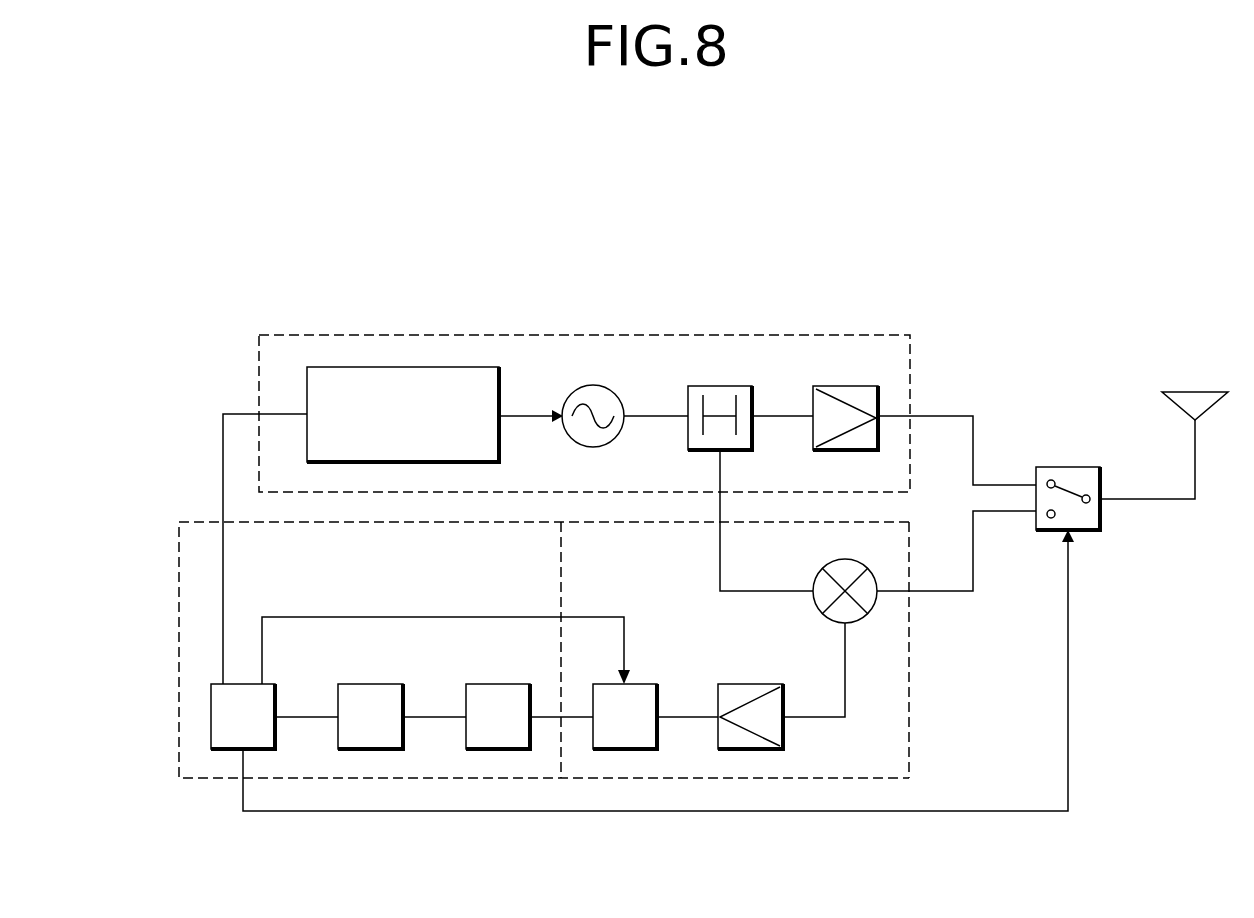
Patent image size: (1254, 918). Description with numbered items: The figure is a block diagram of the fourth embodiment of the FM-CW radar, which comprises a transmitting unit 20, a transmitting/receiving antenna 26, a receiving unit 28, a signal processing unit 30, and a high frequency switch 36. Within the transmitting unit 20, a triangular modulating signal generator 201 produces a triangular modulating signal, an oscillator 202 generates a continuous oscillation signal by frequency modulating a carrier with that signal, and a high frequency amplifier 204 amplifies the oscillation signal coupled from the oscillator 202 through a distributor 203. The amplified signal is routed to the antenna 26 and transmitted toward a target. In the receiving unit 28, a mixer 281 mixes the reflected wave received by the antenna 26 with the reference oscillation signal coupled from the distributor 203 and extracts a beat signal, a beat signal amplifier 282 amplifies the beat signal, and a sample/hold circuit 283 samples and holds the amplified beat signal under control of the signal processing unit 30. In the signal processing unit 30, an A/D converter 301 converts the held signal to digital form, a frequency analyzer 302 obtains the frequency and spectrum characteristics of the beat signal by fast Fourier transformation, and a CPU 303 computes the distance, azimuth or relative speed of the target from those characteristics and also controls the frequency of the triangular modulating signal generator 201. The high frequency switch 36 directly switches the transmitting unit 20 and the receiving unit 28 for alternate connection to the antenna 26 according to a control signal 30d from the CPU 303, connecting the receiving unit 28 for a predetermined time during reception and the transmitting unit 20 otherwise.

The transmitting unit 20 is at (260, 335).
The triangular modulating signal generator 201 is at (385, 367).
The oscillator 202 is at (590, 385).
The distributor 203 is at (712, 386).
The high frequency amplifier 204 is at (835, 386).
The transmitting/receiving antenna 26 is at (1185, 392).
The high frequency switch 36 is at (1062, 467).
The signal processing unit 30 is at (182, 522).
The receiving unit 28 is at (910, 700).
The mixer 281 is at (875, 601).
The beat signal amplifier 282 is at (755, 750).
The sample/hold circuit 283 is at (625, 750).
The A/D converter 301 is at (497, 750).
The frequency analyzer 302 is at (373, 750).
The CPU 303 is at (228, 750).
The control signal 30d is at (440, 811).